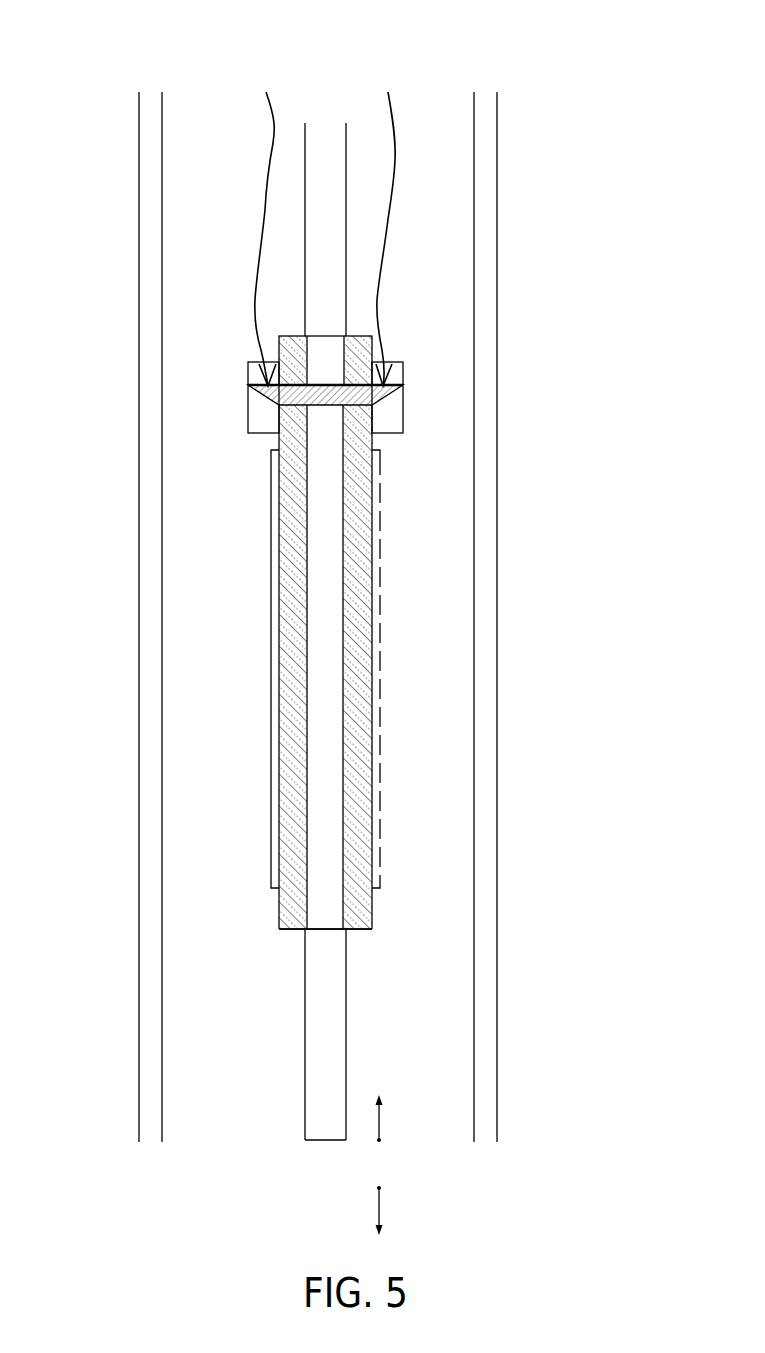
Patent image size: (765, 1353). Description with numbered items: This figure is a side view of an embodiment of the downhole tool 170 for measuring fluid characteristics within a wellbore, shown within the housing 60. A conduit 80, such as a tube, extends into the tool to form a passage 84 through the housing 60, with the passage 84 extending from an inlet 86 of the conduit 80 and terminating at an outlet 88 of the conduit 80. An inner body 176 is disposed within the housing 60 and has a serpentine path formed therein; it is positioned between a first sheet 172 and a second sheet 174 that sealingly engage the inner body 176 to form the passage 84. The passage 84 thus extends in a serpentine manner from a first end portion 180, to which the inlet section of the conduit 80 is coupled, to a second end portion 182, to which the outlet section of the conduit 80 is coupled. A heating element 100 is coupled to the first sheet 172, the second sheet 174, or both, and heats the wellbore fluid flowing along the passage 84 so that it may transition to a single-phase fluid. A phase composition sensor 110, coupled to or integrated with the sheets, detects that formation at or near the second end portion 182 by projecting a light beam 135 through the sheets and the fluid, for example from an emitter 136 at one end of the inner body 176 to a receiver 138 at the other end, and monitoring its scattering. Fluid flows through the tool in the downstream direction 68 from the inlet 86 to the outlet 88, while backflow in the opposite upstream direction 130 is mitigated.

The housing 60 is at (152, 357).
The downhole tool 170 is at (425, 53).
The conduit 80 is at (347, 230).
The outlet 88 is at (313, 123).
The inlet 86 is at (323, 1145).
The second end portion 182 is at (322, 334).
The phase composition sensor 110 is at (396, 359).
The light beam 135 is at (318, 397).
The receiver 138 is at (267, 420).
The emitter 136 is at (383, 420).
The passage 84 is at (339, 637).
The heating element 100 is at (270, 604).
The inner body 176 is at (348, 817).
The second sheet 174 is at (290, 912).
The first sheet 172 is at (352, 920).
The first end portion 180 is at (325, 930).
The downstream direction 68 is at (383, 1118).
The upstream direction 130 is at (383, 1200).